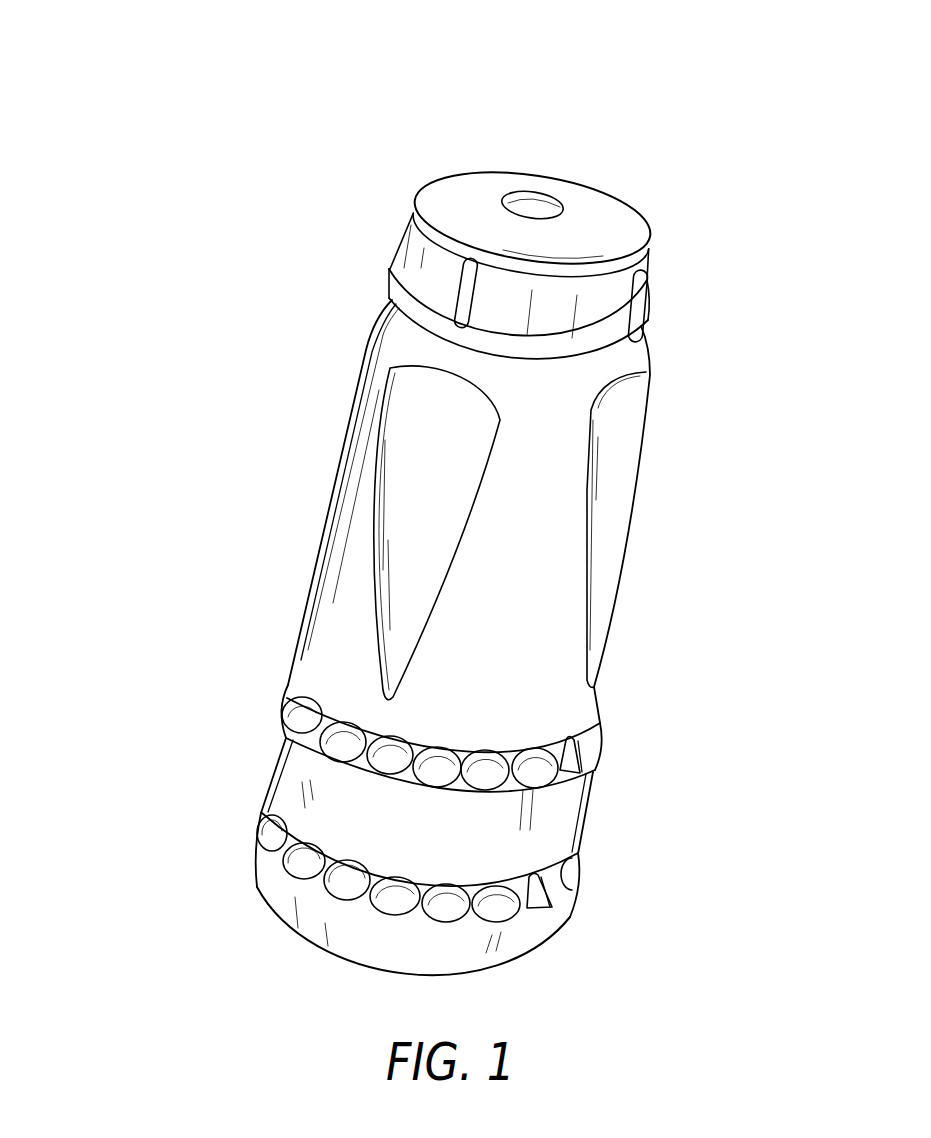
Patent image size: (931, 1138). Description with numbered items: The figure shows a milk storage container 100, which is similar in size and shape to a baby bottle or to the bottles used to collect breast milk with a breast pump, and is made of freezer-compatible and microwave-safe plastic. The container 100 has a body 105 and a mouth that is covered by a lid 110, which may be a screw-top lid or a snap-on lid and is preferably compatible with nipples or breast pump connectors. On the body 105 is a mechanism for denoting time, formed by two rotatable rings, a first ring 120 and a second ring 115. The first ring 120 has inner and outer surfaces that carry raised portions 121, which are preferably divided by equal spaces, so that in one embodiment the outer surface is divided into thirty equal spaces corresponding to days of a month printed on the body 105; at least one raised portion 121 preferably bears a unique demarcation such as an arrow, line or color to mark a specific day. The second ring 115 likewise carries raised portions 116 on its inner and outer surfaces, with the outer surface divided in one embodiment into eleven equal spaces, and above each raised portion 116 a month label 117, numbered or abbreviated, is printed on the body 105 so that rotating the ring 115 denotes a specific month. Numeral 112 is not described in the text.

The milk storage container 100 is at (81, 139).
The lid 110 is at (529, 158).
The body 105 is at (612, 504).
The upper rotatable band 112 is at (424, 733).
The raised portions 121 is at (402, 759).
The first ring 120 is at (568, 763).
The month labels 117 is at (429, 869).
The raised portions 116 is at (392, 919).
The second ring 115 is at (552, 898).